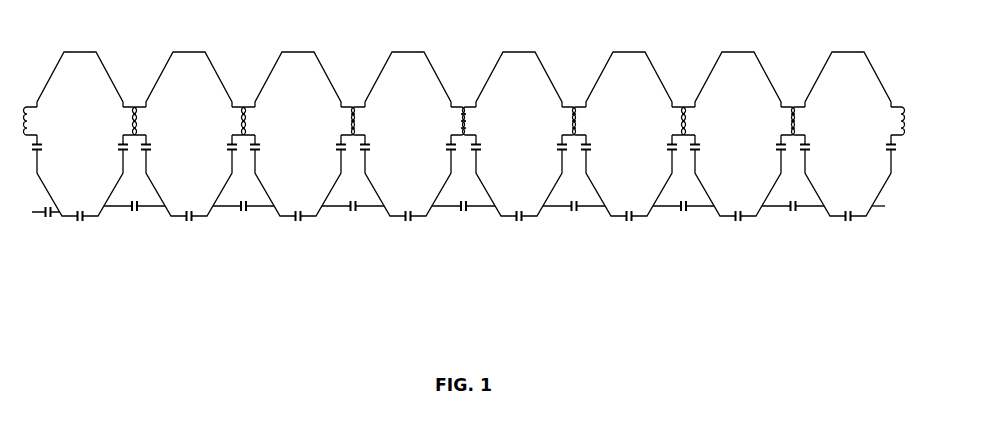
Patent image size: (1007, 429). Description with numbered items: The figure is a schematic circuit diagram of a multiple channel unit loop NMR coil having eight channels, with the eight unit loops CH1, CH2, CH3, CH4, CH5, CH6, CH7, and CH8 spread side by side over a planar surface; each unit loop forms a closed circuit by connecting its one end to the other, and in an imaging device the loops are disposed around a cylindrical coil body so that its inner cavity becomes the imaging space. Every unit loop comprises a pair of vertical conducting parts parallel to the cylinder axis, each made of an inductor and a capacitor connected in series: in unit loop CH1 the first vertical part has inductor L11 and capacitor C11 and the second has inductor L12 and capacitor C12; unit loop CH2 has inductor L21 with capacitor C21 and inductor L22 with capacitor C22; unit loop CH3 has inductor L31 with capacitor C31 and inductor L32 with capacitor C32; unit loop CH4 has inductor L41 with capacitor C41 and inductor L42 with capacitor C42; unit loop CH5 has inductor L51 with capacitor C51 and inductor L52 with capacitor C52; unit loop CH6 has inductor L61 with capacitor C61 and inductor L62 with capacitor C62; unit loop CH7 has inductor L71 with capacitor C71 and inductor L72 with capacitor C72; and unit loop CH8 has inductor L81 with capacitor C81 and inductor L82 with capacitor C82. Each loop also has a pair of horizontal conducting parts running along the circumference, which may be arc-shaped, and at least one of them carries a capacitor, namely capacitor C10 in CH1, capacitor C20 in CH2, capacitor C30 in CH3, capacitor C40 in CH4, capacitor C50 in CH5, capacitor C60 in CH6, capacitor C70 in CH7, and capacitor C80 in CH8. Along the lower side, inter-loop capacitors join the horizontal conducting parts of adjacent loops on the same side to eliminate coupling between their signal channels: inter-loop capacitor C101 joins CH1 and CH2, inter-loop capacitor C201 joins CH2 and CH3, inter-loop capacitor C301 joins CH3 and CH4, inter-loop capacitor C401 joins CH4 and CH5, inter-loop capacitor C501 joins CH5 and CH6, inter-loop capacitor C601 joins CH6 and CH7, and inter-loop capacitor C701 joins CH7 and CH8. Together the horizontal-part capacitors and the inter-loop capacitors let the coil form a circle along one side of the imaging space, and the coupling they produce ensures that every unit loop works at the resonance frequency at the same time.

The unit loop CH1 is at (408, 132).
The unit loop CH2 is at (519, 132).
The unit loop CH3 is at (629, 132).
The unit loop CH4 is at (738, 132).
The unit loop CH5 is at (848, 132).
The unit loop CH6 is at (80, 132).
The unit loop CH7 is at (189, 132).
The unit loop CH8 is at (298, 132).
The inductor L11 is at (370, 121).
The inductor L12 is at (446, 121).
The inductor L21 is at (481, 121).
The inductor L22 is at (557, 121).
The inductor L31 is at (591, 121).
The inductor L32 is at (667, 121).
The inductor L41 is at (700, 121).
The inductor L42 is at (776, 121).
The inductor L51 is at (810, 121).
The inductor L52 is at (886, 121).
The inductor L61 is at (42, 121).
The inductor L62 is at (118, 121).
The inductor L71 is at (151, 121).
The inductor L72 is at (227, 121).
The inductor L81 is at (260, 121).
The inductor L82 is at (336, 121).
The capacitor C11 is at (378, 156).
The capacitor C12 is at (438, 148).
The capacitor C10 is at (410, 225).
The capacitor C21 is at (489, 156).
The capacitor C22 is at (549, 148).
The capacitor C20 is at (521, 225).
The capacitor C31 is at (599, 156).
The capacitor C32 is at (659, 148).
The capacitor C30 is at (631, 225).
The capacitor C41 is at (708, 156).
The capacitor C42 is at (768, 148).
The capacitor C40 is at (740, 225).
The capacitor C51 is at (818, 156).
The capacitor C52 is at (878, 148).
The capacitor C50 is at (850, 225).
The capacitor C61 is at (50, 156).
The capacitor C62 is at (110, 148).
The capacitor C60 is at (82, 225).
The capacitor C71 is at (159, 156).
The capacitor C72 is at (219, 148).
The capacitor C70 is at (191, 225).
The capacitor C81 is at (268, 156).
The capacitor C82 is at (328, 148).
The capacitor C80 is at (300, 225).
The inter-loop capacitor C501 is at (49, 220).
The inter-loop capacitor C601 is at (244, 216).
The inter-loop capacitor C701 is at (243, 216).
The inter-loop capacitor C101 is at (463, 216).
The inter-loop capacitor C201 is at (574, 216).
The inter-loop capacitor C301 is at (683, 216).
The inter-loop capacitor C401 is at (793, 216).